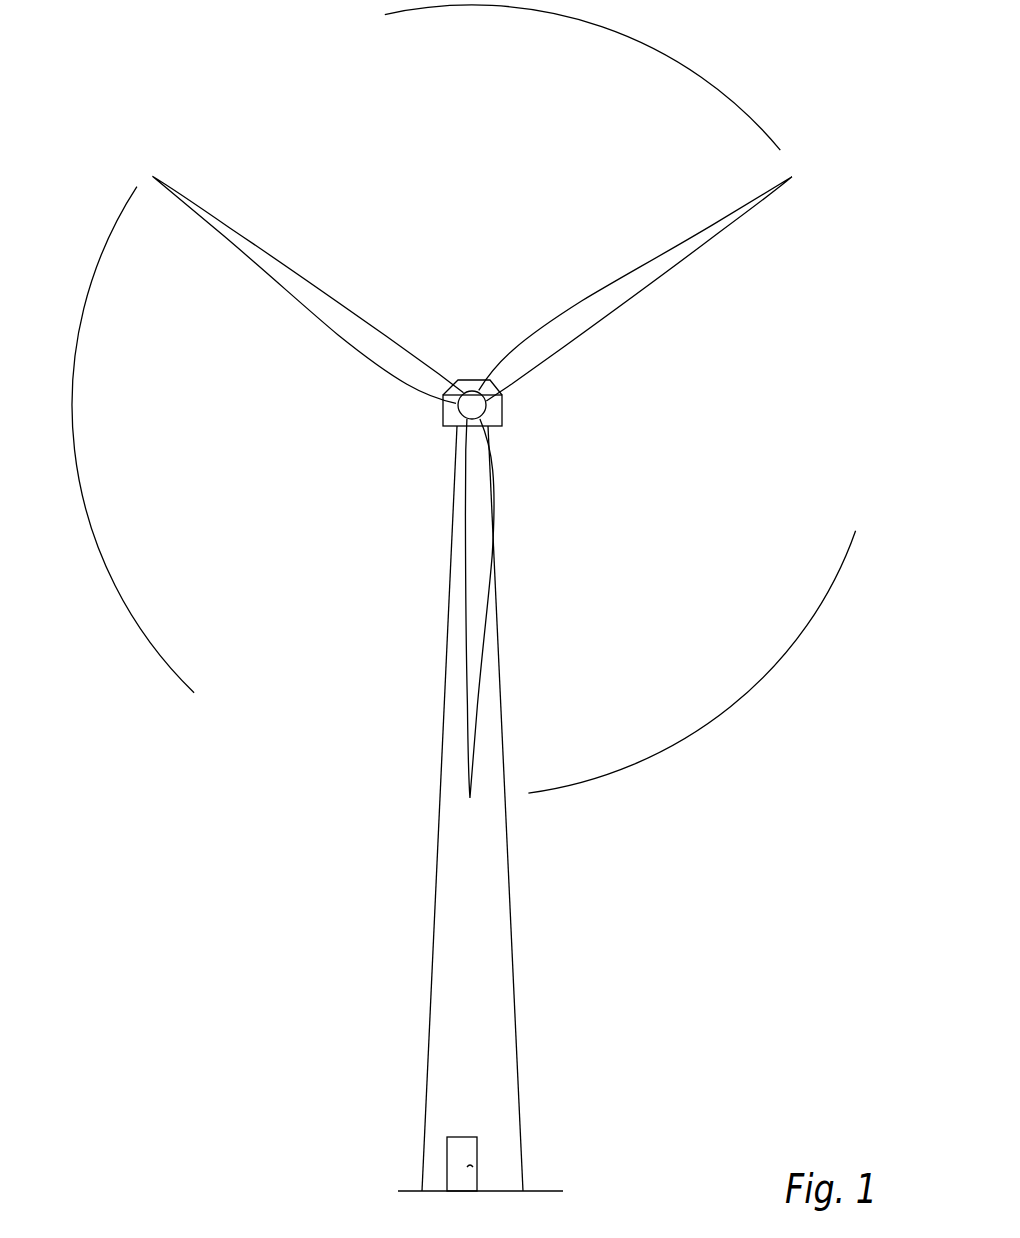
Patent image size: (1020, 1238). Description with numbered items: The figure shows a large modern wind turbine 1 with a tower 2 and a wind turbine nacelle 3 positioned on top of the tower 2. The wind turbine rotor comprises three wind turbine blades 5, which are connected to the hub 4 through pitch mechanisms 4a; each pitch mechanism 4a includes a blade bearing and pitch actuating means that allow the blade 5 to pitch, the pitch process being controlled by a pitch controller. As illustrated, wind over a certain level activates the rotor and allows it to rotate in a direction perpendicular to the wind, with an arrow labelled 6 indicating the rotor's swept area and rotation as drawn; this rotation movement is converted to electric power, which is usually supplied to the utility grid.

The wind turbine 1 is at (467, 674).
The tower 2 is at (498, 908).
The wind turbine nacelle 3 is at (503, 428).
The hub 4 is at (467, 478).
The pitch mechanism 4a is at (502, 402).
The wind turbine blade 5 is at (475, 725).
The rotor swept area 6 is at (160, 736).